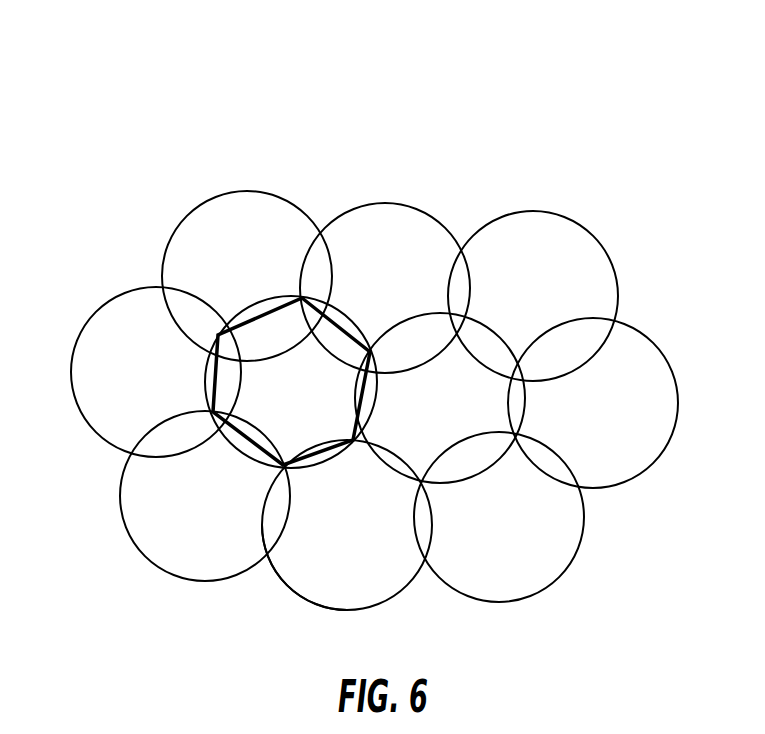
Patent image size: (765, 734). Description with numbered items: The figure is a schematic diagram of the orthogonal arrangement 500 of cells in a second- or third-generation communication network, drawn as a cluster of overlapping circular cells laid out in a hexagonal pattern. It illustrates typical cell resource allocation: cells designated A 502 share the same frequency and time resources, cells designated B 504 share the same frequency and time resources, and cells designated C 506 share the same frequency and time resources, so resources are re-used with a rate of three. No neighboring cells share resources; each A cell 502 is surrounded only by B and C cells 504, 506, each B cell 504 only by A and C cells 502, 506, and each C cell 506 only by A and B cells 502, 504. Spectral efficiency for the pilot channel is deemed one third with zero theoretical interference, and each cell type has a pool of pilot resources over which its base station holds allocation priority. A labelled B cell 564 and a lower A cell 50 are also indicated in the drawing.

The orthogonal arrangement 500 is at (666, 141).
The cells designated A 502 is at (398, 218).
The cells designated B 504 is at (190, 230).
The cells designated C 506 is at (582, 250).
The type B region 564 is at (495, 412).
The region 50 is at (362, 588).